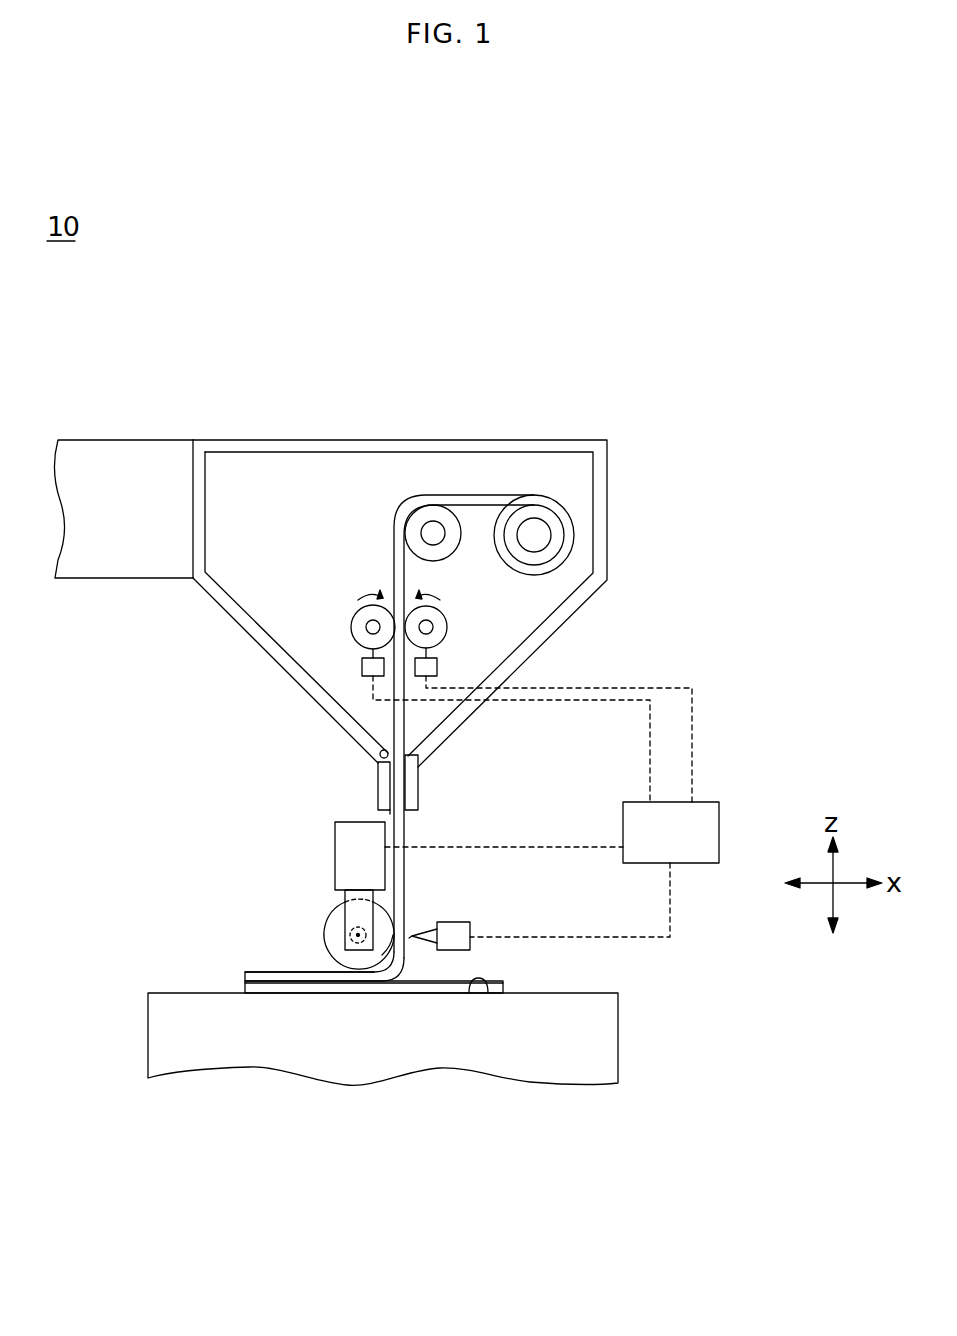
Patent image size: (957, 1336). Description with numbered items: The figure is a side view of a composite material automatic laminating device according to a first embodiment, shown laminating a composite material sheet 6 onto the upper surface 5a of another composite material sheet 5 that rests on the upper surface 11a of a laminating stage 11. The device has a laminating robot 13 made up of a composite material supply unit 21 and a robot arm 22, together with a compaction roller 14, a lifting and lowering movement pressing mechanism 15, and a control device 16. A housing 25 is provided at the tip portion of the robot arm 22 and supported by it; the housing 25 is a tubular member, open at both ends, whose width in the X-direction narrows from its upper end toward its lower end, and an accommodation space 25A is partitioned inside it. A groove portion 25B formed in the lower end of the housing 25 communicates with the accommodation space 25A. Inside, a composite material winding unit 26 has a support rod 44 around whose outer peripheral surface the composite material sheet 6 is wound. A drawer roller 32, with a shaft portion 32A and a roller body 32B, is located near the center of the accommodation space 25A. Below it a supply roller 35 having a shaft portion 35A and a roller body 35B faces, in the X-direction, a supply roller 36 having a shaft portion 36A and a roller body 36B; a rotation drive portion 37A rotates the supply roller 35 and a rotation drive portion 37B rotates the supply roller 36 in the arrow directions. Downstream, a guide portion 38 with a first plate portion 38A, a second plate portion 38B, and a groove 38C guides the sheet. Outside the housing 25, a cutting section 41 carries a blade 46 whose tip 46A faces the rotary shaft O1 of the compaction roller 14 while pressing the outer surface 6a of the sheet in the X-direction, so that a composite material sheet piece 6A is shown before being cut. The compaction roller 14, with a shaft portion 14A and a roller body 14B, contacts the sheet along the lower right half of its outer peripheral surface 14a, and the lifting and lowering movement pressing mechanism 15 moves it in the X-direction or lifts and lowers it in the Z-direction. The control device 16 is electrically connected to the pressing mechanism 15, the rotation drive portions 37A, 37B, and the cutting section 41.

The laminating robot 13 is at (243, 328).
The composite material supply unit 21 is at (228, 426).
The robot arm 22 is at (143, 452).
The housing 25 is at (525, 444).
The accommodation space 25A is at (305, 490).
The groove portion 25B is at (379, 754).
The drawer roller 32 is at (548, 335).
The shaft portion 32A is at (440, 530).
The roller body 32B is at (428, 516).
The composite material winding unit 26 is at (707, 408).
The support rod 44 is at (538, 530).
The composite material sheet 6 is at (504, 498).
The composite material sheet piece 6A is at (320, 973).
The outer surface 6a is at (302, 972).
The supply roller 35 is at (690, 592).
The shaft portion 35A is at (433, 631).
The roller body 35B is at (447, 623).
The supply roller 36 is at (118, 630).
The shaft portion 36A is at (351, 627).
The roller body 36B is at (358, 640).
The rotation drive portion 37A is at (438, 667).
The rotation drive portion 37B is at (361, 668).
The guide portion 38 is at (548, 715).
The first plate portion 38A is at (390, 778).
The second plate portion 38B is at (410, 790).
The groove 38C is at (390, 804).
The lifting and lowering movement pressing mechanism 15 is at (341, 832).
The compaction roller 14 is at (403, 1138).
The shaft portion 14A is at (358, 935).
The roller body 14B is at (371, 964).
The outer peripheral surface 14a is at (398, 964).
The rotary shaft O1 is at (356, 935).
The cutting section 41 is at (466, 920).
The blade 46 is at (418, 934).
The tip 46A is at (412, 942).
The control device 16 is at (712, 836).
The composite material sheet 5 is at (505, 990).
The upper surface 5a is at (443, 978).
The laminating stage 11 is at (568, 1072).
The upper surface 11a is at (487, 985).